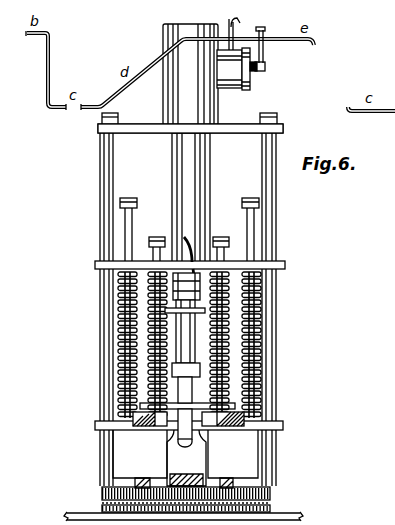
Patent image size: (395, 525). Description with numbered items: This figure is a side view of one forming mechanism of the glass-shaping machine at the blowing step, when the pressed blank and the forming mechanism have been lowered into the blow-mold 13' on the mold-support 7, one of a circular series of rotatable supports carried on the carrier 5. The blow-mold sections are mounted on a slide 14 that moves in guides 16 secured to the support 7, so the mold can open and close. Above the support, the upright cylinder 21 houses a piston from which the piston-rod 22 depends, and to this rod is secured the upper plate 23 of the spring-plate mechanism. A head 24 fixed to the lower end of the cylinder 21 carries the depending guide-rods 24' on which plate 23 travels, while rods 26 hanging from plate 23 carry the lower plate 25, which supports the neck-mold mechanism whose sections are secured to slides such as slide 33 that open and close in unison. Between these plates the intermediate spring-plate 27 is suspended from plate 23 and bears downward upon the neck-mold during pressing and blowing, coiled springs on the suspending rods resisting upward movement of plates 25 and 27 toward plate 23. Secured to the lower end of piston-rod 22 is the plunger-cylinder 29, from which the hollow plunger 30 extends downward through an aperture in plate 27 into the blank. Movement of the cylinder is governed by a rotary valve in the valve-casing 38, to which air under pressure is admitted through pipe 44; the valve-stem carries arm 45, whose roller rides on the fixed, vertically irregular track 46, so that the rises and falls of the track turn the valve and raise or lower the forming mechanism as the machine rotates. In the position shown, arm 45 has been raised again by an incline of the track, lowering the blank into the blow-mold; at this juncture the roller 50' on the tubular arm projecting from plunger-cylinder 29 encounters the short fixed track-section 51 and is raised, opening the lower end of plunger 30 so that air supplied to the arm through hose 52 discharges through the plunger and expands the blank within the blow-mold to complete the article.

The carrier 5 is at (183, 507).
The mold-support 7 is at (102, 492).
The bottle 13' is at (204, 458).
The slide 14 is at (268, 489).
The guides 16 is at (185, 459).
The upright cylinder 21 is at (172, 40).
The piston-rod 22 is at (175, 158).
The upper plate 23 is at (286, 267).
The head 24 is at (206, 123).
The guide-rods 24' is at (208, 309).
The lower plate 25 is at (285, 428).
The rods 26 is at (249, 213).
The intermediate spring-plate 27 is at (140, 405).
The plunger-cylinder 29 is at (184, 349).
The hollow plunger 30 is at (172, 440).
The slide 33 is at (219, 428).
The valve-casing 38 is at (240, 88).
The pipe 44 is at (228, 27).
The arm 45 is at (262, 38).
The track 46 is at (57, 70).
The roller 50' is at (117, 345).
The track-section 51 is at (164, 320).
The hose 52 is at (177, 238).